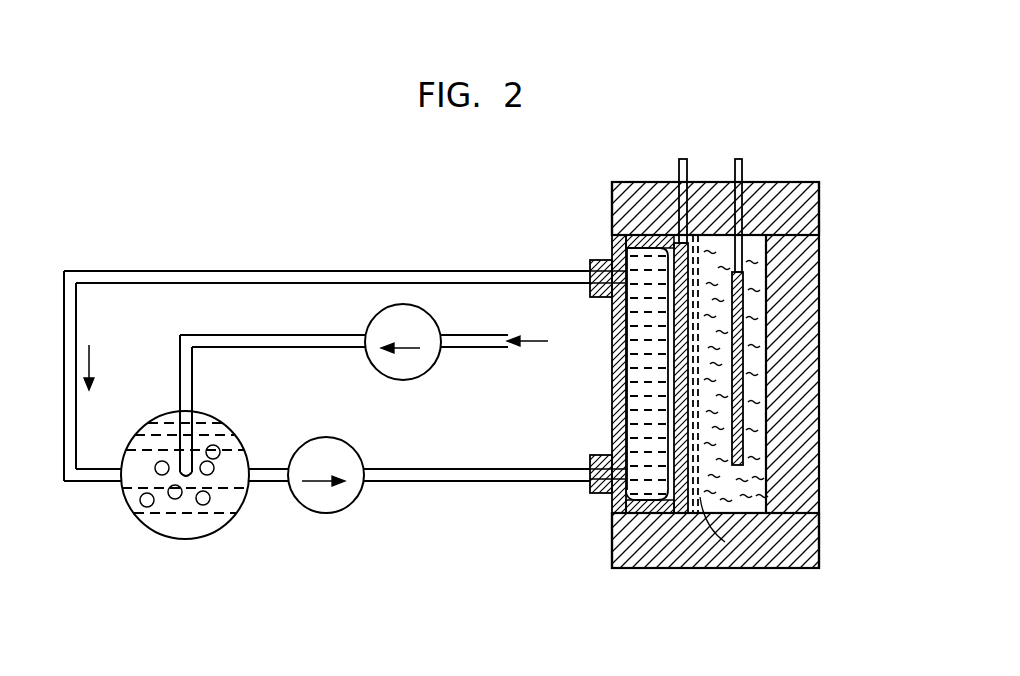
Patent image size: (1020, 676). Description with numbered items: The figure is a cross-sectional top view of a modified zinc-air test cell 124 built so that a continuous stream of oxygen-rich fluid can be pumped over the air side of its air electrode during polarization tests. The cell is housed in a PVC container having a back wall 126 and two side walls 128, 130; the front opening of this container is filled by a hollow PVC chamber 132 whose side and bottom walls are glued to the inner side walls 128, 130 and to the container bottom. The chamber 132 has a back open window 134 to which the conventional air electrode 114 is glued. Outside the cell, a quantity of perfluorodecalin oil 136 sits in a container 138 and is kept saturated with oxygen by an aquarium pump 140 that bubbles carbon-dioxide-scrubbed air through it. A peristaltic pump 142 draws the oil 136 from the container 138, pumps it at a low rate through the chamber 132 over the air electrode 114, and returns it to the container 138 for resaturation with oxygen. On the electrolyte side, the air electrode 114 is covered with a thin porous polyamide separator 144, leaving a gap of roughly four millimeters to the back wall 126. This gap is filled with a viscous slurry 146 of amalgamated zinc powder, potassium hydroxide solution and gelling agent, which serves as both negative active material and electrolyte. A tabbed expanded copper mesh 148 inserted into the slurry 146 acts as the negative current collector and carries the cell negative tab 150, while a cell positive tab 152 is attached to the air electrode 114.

The air electrode 114 is at (680, 413).
The modified test cell 124 is at (711, 386).
The back wall 126 is at (717, 375).
The side wall 128 is at (622, 207).
The side wall 130 is at (624, 550).
The hollow PVC chamber 132 is at (616, 370).
The back open window 134 is at (672, 284).
The perfluorodecalin oil 136 is at (171, 503).
The container 138 is at (133, 512).
The aquarium pump 140 is at (403, 378).
The peristaltic pump 142 is at (326, 506).
The porous polyamide separator 144 is at (725, 542).
The viscous slurry 146 is at (760, 483).
The expanded copper mesh 148 is at (737, 382).
The cell negative tab 150 is at (810, 302).
The cell positive tab 152 is at (678, 164).